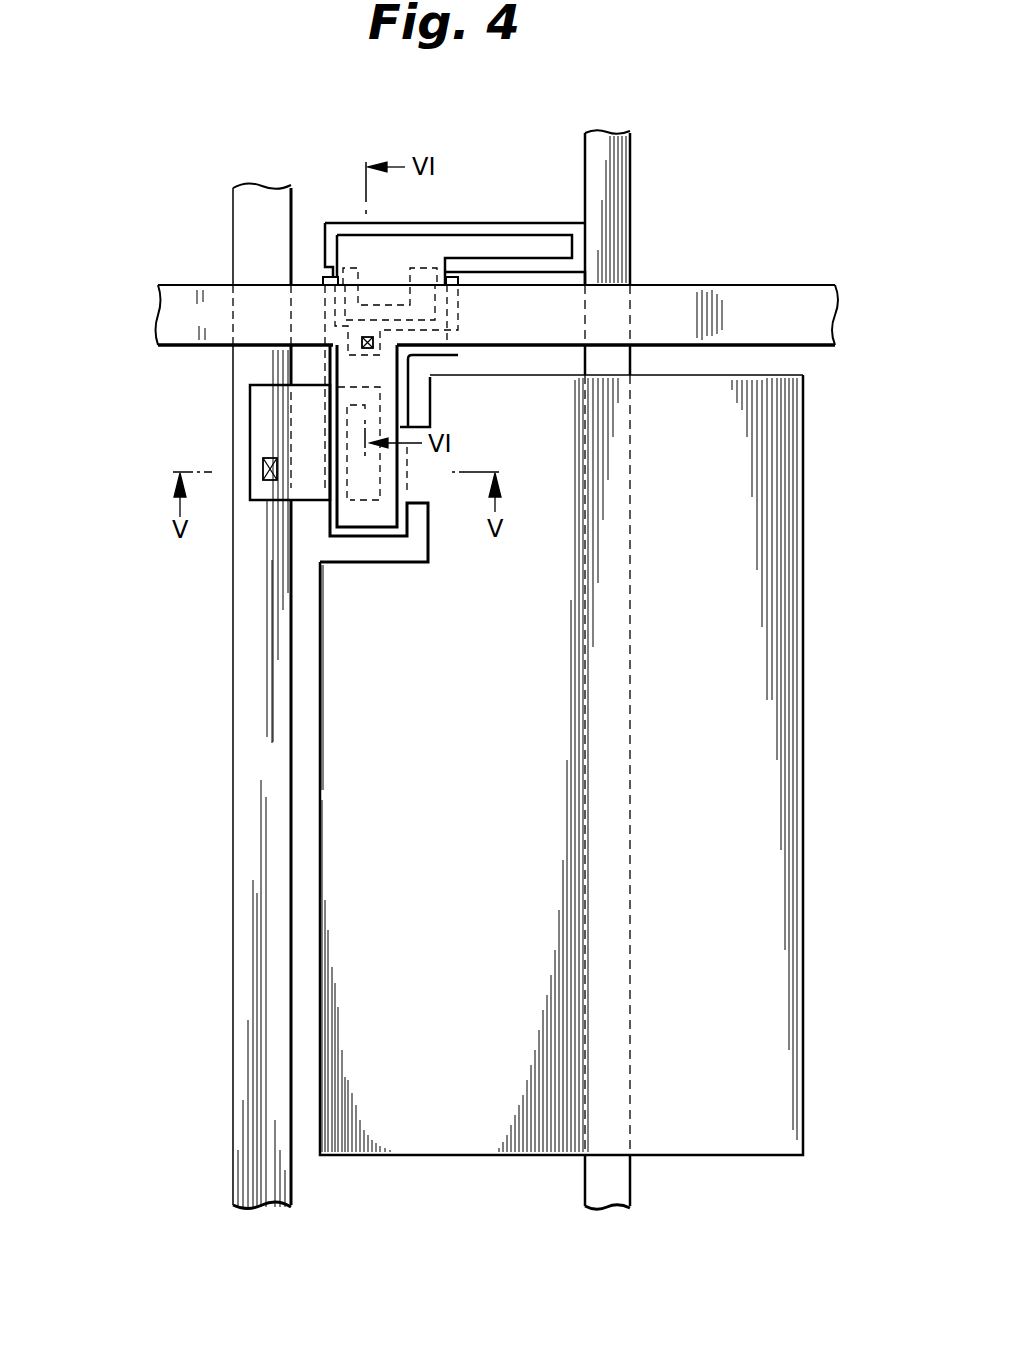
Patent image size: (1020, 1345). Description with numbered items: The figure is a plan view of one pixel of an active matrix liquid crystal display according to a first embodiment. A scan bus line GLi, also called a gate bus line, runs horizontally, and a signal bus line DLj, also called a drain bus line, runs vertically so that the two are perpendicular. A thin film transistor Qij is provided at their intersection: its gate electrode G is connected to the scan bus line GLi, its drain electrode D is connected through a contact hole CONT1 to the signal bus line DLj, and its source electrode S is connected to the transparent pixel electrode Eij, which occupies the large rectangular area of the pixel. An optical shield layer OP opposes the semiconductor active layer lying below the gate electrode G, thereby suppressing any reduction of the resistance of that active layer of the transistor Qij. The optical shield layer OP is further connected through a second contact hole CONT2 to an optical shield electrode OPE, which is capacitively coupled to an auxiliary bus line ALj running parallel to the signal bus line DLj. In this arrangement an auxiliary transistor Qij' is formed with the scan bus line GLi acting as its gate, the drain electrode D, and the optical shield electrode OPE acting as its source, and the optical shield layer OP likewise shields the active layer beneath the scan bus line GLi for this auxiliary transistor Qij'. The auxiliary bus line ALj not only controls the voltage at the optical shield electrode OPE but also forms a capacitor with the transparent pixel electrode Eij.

The signal bus line DLj is at (282, 1188).
The scan bus line GLi is at (746, 290).
The auxiliary bus line ALj is at (617, 1188).
The transparent pixel electrode Eij is at (772, 1030).
The optical shield electrode OPE is at (515, 248).
The source electrode S is at (412, 432).
The drain electrode D is at (302, 420).
The gate electrode G is at (358, 522).
The optical shield layer OP is at (328, 538).
The contact hole CONT1 is at (263, 481).
The contact hole CONT2 is at (361, 338).
The TFT Qij is at (225, 566).
The auxiliary TFT Qij' is at (270, 322).